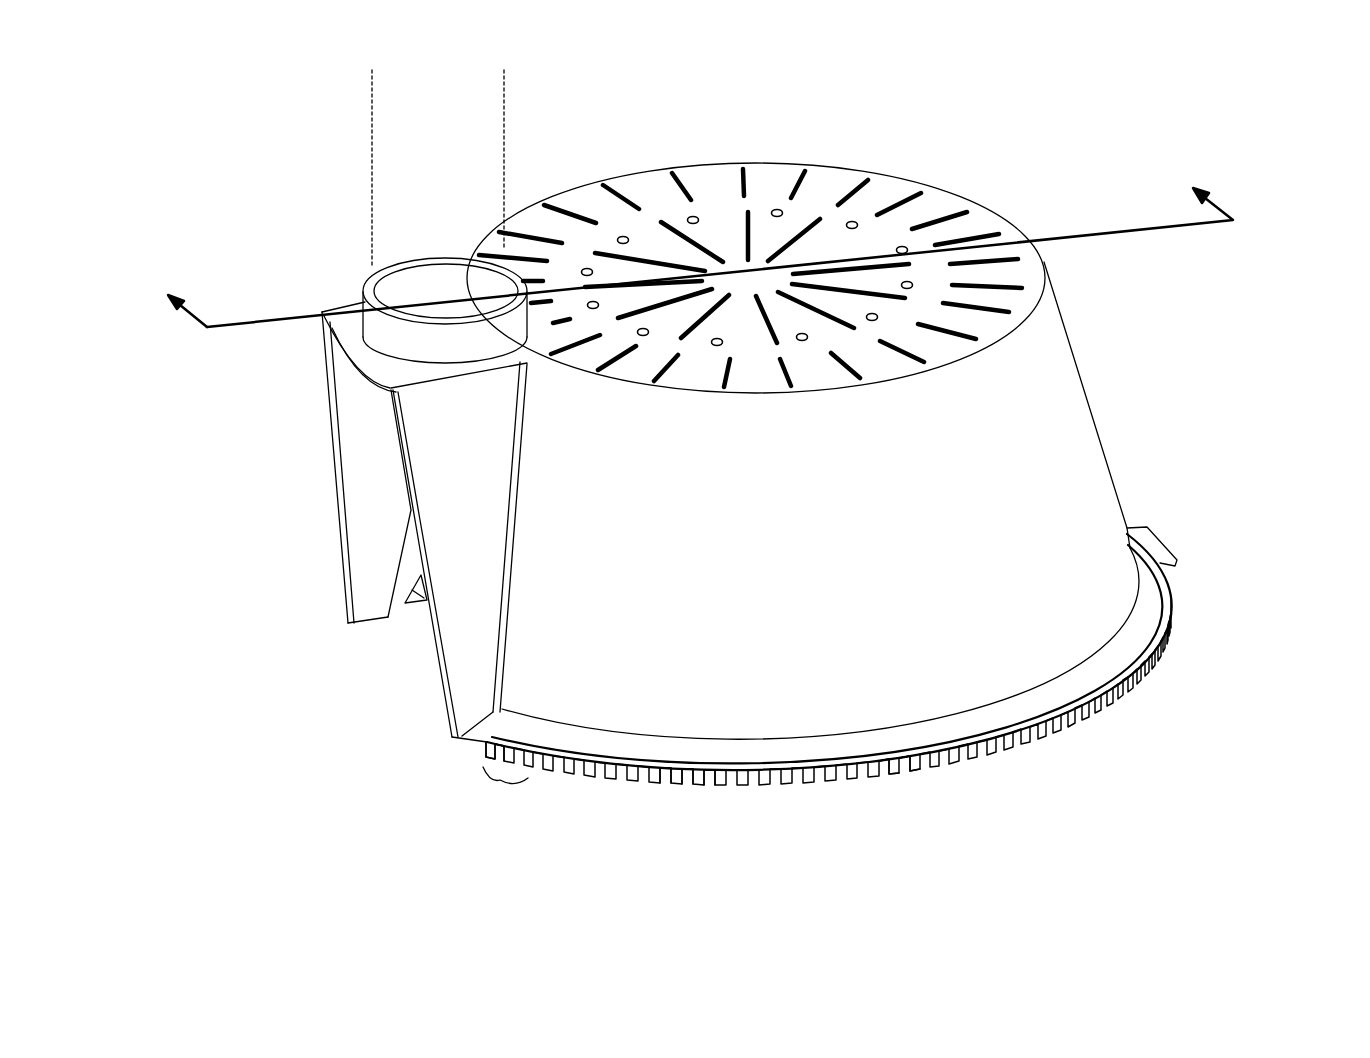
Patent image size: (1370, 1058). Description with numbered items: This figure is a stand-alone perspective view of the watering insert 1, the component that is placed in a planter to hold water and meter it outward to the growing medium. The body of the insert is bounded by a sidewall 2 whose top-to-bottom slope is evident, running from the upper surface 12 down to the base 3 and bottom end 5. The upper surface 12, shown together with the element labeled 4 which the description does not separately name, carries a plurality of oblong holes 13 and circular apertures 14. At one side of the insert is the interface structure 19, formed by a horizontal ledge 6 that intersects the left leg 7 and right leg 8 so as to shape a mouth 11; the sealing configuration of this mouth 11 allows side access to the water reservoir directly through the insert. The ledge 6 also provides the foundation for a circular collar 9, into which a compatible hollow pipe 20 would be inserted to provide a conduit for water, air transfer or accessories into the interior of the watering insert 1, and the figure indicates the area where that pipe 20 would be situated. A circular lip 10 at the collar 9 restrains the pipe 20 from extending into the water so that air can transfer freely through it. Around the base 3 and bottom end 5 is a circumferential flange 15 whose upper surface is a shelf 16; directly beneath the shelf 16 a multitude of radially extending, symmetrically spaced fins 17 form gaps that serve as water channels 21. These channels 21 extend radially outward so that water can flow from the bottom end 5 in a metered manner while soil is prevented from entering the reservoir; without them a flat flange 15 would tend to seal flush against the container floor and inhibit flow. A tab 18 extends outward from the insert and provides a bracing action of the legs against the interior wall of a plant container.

The watering insert 1 is at (1153, 137).
The sidewall 2 is at (1023, 435).
The base 3 is at (881, 718).
The lid 4 is at (829, 217).
The bottom end 5 is at (1173, 598).
The ledge 6 is at (383, 370).
The left leg 7 is at (367, 518).
The right leg 8 is at (470, 655).
The collar 9 is at (434, 257).
The circular lip 10 is at (478, 292).
The mouth 11 is at (400, 431).
The upper surface 12 is at (1003, 207).
The oblong holes 13 is at (970, 207).
The circular apertures 14 is at (700, 210).
The circumferential flange 15 is at (792, 751).
The shelf 16 is at (800, 748).
The fins 17 is at (497, 793).
The tab 18 is at (1152, 543).
The interface structure 19 is at (405, 653).
The pipe 20 is at (370, 218).
The water channels 21 is at (710, 790).